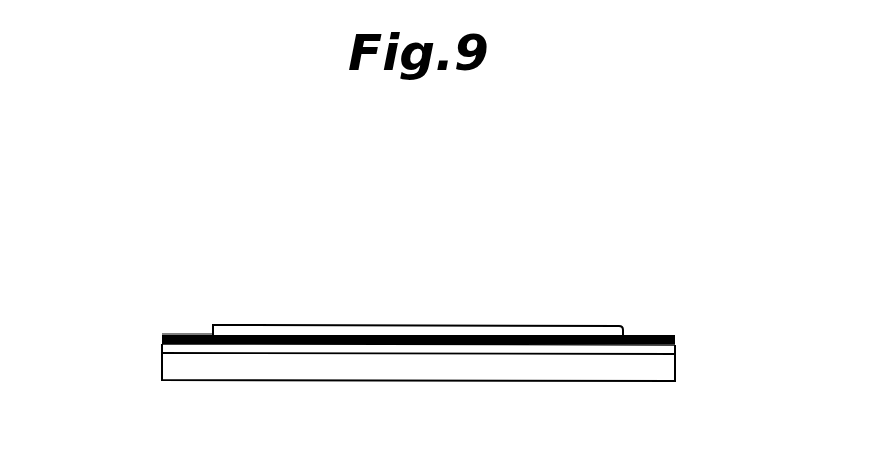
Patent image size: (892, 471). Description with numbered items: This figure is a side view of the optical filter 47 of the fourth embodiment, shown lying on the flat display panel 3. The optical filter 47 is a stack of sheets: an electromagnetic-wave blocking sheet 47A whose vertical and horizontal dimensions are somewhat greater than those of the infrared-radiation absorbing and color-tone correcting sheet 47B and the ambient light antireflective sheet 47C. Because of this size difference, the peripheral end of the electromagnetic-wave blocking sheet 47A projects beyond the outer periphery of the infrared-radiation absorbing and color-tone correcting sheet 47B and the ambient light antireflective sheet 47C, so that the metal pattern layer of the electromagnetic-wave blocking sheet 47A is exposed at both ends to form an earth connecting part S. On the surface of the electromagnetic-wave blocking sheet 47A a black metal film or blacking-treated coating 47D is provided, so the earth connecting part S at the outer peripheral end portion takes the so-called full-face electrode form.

The flat display panel 3 is at (503, 365).
The optical filter 47 is at (378, 324).
The electromagnetic-wave blocking sheet 47A is at (563, 348).
The infrared-radiation absorbing and color-tone correcting sheet 47B is at (452, 326).
The ambient light antireflective sheet 47C is at (418, 339).
The black metal film or blacking-treated coating 47D is at (590, 334).
The earth connecting part S is at (187, 334).